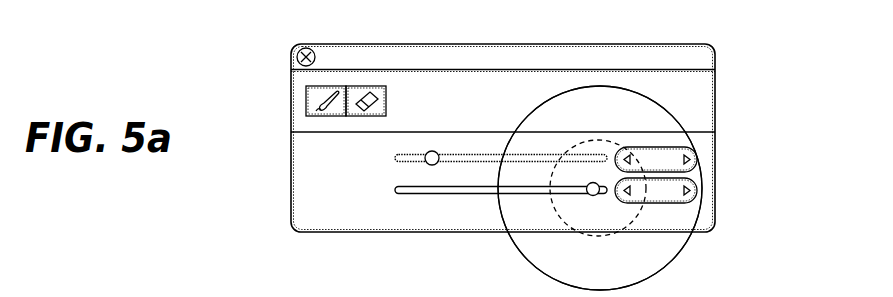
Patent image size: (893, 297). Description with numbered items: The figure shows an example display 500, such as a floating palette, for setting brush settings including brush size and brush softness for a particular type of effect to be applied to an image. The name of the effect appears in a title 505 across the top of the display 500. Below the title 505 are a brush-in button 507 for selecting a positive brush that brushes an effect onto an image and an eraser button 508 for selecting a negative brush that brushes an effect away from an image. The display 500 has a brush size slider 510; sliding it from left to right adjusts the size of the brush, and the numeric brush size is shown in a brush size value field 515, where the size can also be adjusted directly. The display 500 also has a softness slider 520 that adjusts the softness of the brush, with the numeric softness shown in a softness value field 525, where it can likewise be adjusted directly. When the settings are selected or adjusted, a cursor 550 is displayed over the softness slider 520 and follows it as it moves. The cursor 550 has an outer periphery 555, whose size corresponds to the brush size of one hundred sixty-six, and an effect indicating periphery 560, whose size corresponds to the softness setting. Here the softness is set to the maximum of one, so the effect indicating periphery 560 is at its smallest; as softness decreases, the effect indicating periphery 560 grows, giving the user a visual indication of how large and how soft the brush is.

The display 500 is at (289, 52).
The title 505 is at (491, 48).
The brush-in button 507 is at (306, 101).
The eraser button 508 is at (360, 116).
The brush size slider 510 is at (425, 165).
The brush size value field 515 is at (697, 158).
The softness slider 520 is at (600, 195).
The softness value field 525 is at (697, 183).
The cursor 550 is at (690, 245).
The outer periphery 555 is at (653, 273).
The effect indicating periphery 560 is at (590, 236).